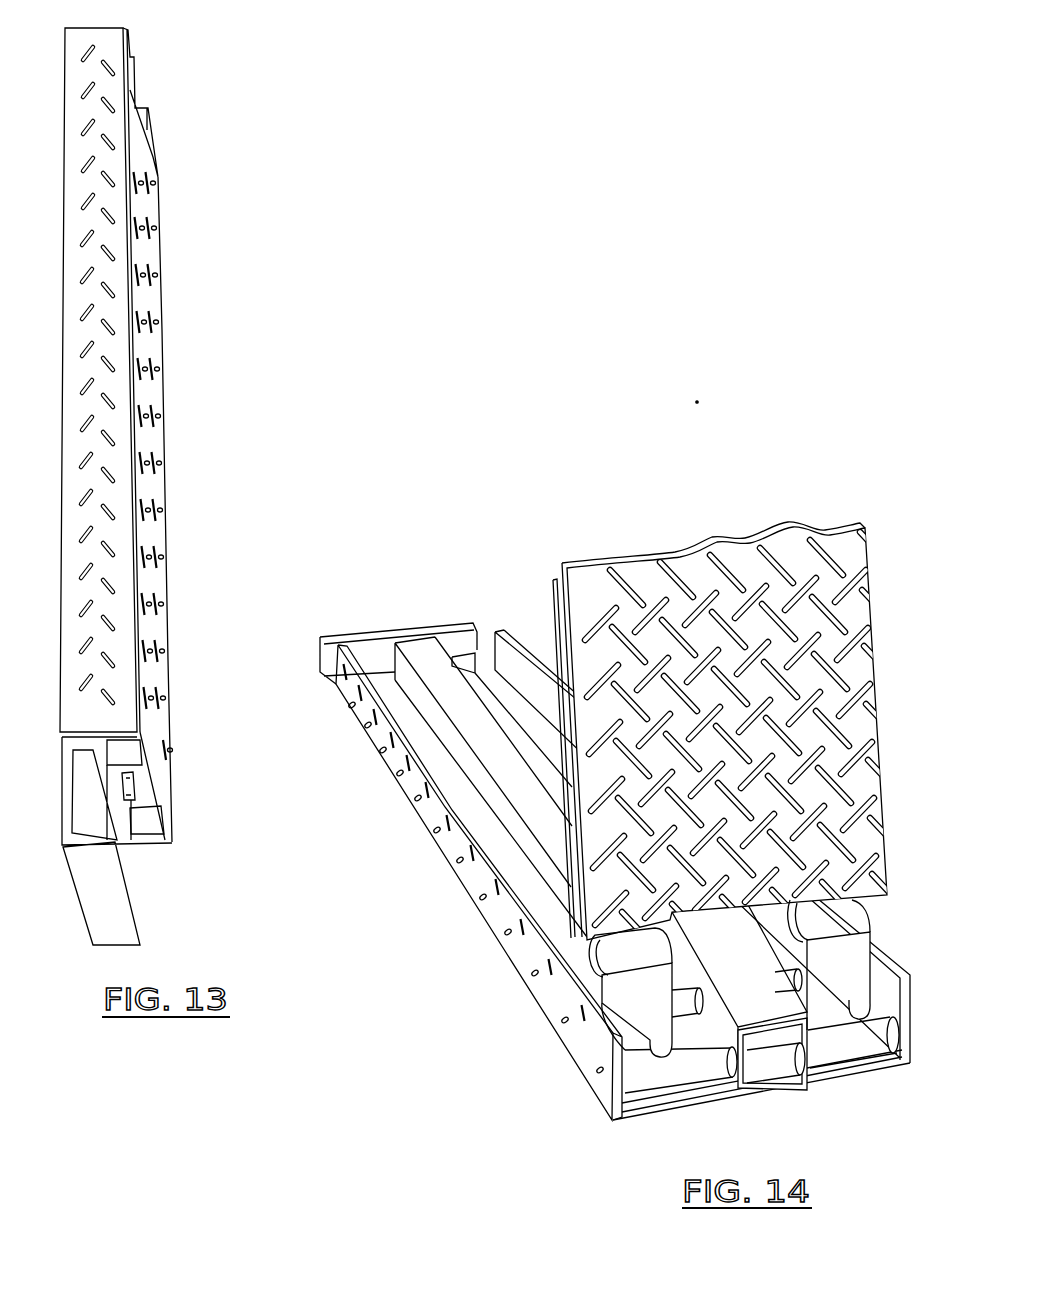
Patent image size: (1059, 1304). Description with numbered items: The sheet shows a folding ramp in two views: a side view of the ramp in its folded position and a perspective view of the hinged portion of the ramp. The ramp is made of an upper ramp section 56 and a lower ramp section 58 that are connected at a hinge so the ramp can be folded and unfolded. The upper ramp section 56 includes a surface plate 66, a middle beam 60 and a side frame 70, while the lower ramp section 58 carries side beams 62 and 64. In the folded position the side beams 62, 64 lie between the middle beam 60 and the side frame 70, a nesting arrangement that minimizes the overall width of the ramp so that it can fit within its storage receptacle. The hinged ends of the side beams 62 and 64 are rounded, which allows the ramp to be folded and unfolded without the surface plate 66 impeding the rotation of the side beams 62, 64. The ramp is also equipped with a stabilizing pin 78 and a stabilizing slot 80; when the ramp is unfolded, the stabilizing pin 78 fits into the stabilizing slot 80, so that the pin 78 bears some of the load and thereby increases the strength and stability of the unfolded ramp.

In FIG. 14, the upper ramp section 56 is at (410, 795).
In FIG. 14, the lower ramp section 58 is at (622, 828).
In FIG. 13, the middle beam 60 is at (128, 784).
In FIG. 13, the side beam 62 is at (145, 823).
In FIG. 14, the side beam 62 is at (625, 993).
In FIG. 13, the side beam 64 is at (127, 754).
In FIG. 14, the side beam 64 is at (848, 990).
In FIG. 14, the surface plate 66 is at (492, 814).
In FIG. 13, the side frame 70 is at (117, 657).
In FIG. 14, the stabilizing pin 78 is at (873, 1043).
In FIG. 14, the stabilizing slot 80 is at (838, 944).